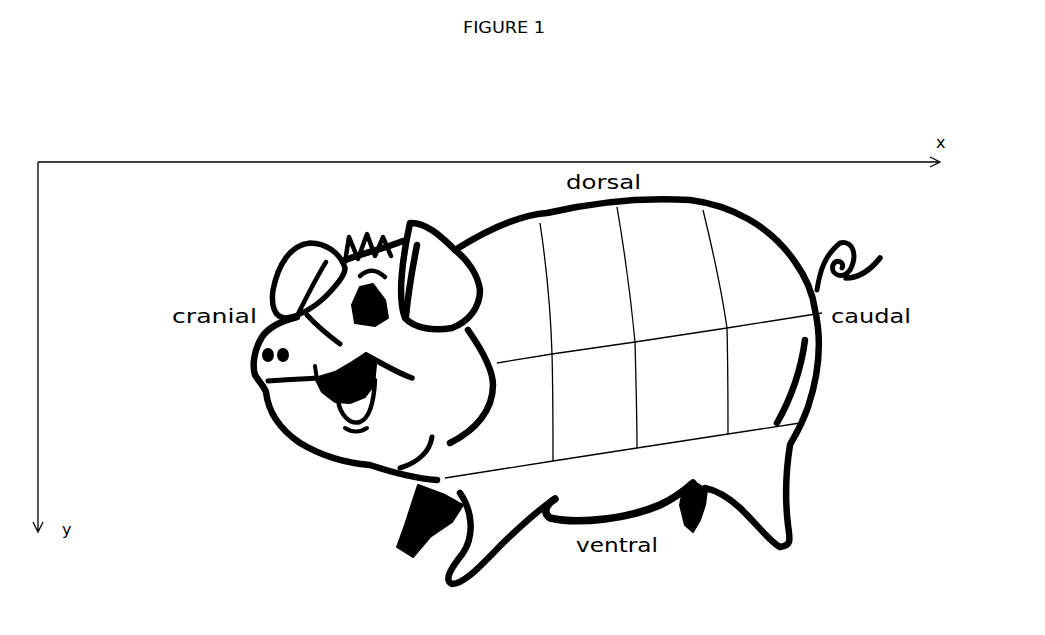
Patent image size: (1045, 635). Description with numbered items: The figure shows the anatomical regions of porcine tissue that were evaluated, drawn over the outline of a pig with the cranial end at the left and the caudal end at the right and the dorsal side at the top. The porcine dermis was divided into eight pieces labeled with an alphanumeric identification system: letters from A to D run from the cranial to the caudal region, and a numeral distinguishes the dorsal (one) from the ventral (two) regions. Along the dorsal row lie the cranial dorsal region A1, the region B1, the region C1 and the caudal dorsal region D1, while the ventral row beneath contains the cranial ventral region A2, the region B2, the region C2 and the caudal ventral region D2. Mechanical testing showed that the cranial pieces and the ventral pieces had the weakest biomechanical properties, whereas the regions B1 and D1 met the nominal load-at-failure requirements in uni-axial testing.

The cranial dorsal region A1 is at (524, 293).
The B1 region B1 is at (593, 280).
The C1 region C1 is at (681, 276).
The caudal dorsal region D1 is at (774, 293).
The cranial ventral region A2 is at (499, 416).
The B2 region B2 is at (595, 401).
The C2 region C2 is at (682, 388).
The caudal ventral region D2 is at (764, 400).